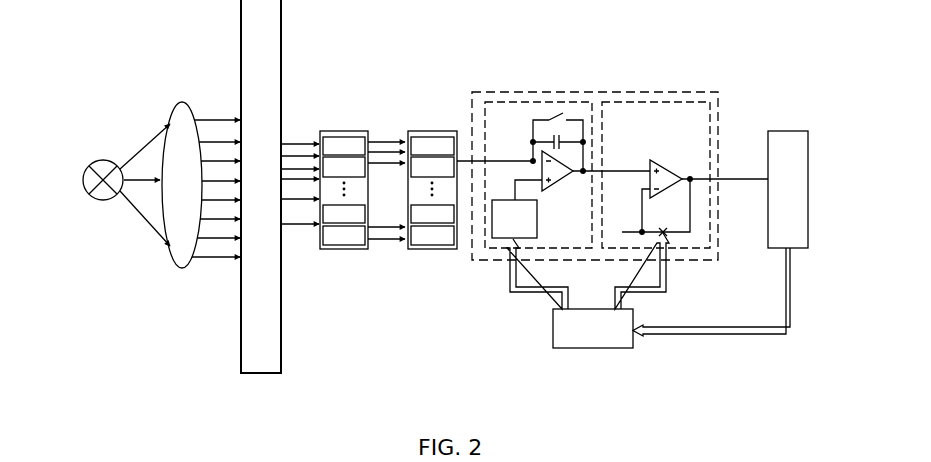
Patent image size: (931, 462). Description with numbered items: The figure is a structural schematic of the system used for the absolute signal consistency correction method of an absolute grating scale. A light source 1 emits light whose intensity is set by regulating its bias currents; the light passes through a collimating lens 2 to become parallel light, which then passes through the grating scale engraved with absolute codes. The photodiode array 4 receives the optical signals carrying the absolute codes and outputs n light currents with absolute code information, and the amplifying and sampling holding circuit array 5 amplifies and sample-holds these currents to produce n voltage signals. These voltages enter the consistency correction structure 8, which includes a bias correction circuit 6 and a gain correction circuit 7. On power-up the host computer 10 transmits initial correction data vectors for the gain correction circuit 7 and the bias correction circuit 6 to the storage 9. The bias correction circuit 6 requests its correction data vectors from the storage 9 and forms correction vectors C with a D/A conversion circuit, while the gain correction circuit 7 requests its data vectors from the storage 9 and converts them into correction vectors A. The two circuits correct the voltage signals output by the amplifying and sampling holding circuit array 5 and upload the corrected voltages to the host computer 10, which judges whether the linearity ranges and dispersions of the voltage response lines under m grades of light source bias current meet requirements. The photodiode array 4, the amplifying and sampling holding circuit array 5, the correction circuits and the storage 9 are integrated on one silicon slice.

The light source 1 is at (108, 161).
The collimating lens 2 is at (182, 102).
The photodiode array 4 is at (357, 132).
The amplifying and sampling holding circuit array 5 is at (437, 249).
The bias correction circuit 6 is at (538, 102).
The gain correction circuit 7 is at (650, 102).
The consistency correction structure 8 is at (678, 92).
The storage 9 is at (592, 348).
The host computer 10 is at (788, 131).